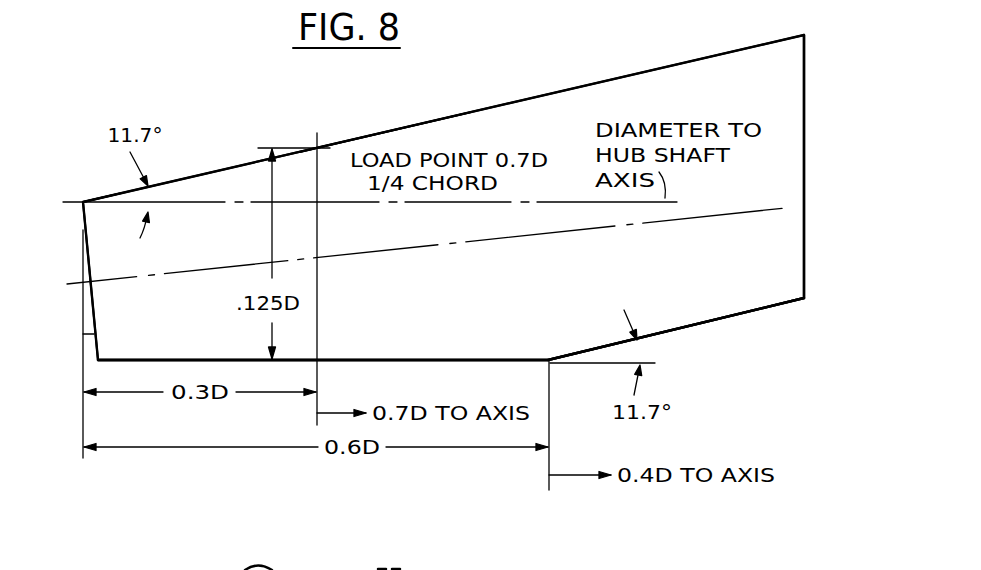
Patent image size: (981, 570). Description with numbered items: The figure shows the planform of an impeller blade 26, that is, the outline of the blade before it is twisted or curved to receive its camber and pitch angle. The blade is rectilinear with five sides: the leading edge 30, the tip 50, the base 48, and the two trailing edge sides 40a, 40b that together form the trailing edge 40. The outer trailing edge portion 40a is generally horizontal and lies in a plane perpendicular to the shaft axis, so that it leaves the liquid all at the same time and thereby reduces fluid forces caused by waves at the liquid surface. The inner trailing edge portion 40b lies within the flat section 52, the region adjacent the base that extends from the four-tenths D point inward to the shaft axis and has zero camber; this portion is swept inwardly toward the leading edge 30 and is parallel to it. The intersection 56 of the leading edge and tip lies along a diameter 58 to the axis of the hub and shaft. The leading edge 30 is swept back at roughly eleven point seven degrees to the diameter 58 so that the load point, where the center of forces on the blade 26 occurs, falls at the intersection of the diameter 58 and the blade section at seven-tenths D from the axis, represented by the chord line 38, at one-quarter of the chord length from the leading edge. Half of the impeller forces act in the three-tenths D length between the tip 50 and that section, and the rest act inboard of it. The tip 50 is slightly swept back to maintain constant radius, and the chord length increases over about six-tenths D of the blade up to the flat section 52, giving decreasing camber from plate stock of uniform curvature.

The blade 26 is at (466, 130).
The leading edge 30 is at (378, 135).
The chord line 38 is at (317, 136).
The trailing edge 40 is at (541, 363).
The outer trailing edge portion 40a is at (405, 358).
The inner trailing edge portion 40b is at (663, 330).
The base 48 is at (806, 97).
The tip 50 is at (83, 334).
The flat section 52 is at (750, 89).
The leading edge and tip intersection 56 is at (83, 200).
The diameter 58 is at (531, 200).